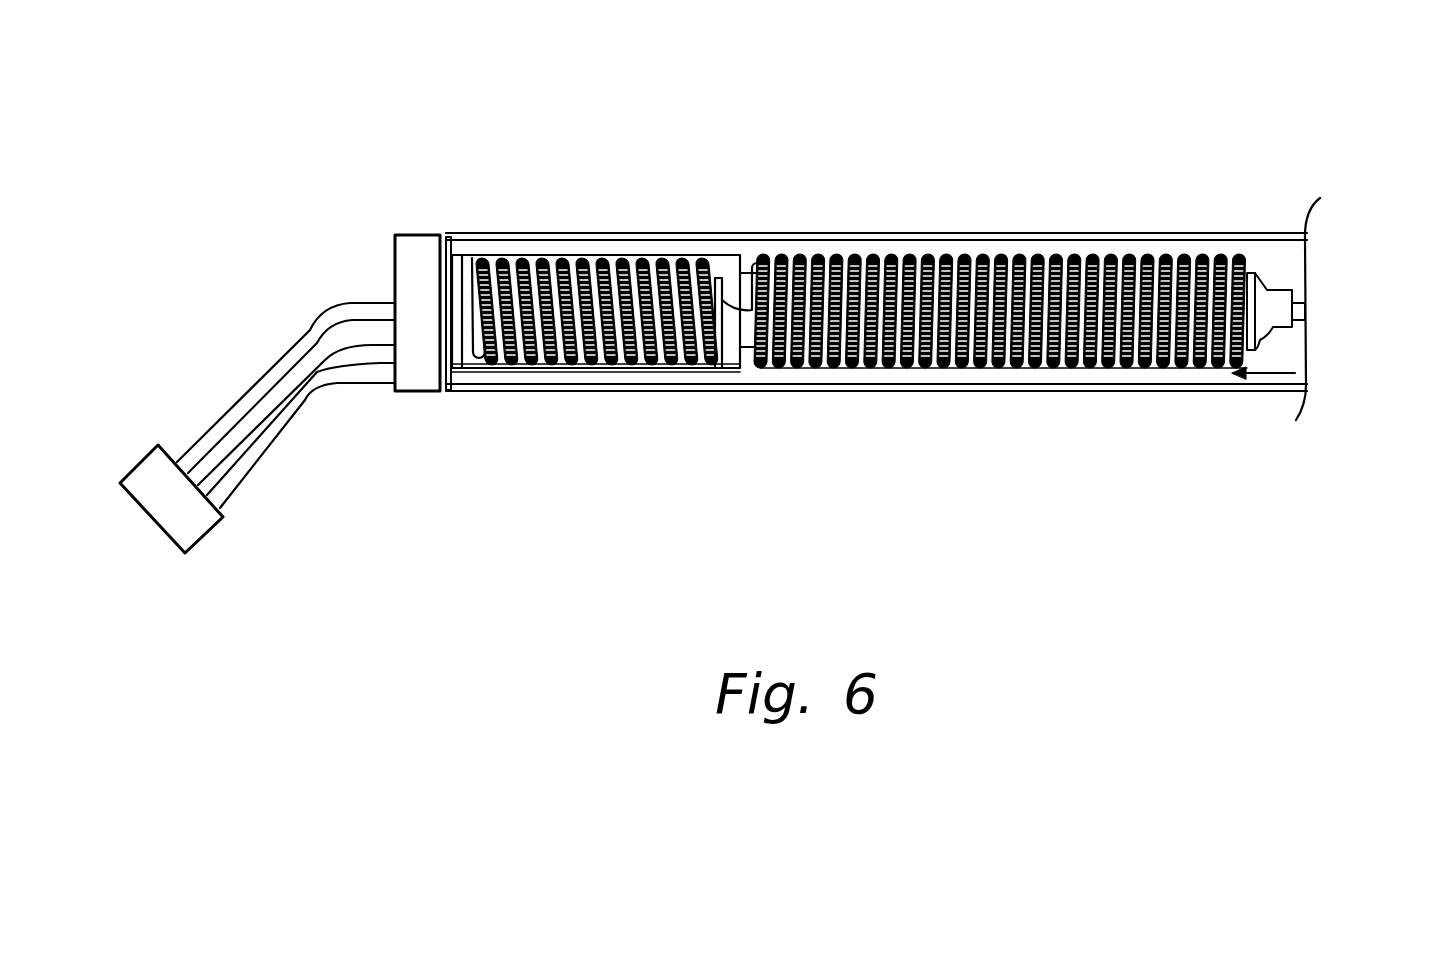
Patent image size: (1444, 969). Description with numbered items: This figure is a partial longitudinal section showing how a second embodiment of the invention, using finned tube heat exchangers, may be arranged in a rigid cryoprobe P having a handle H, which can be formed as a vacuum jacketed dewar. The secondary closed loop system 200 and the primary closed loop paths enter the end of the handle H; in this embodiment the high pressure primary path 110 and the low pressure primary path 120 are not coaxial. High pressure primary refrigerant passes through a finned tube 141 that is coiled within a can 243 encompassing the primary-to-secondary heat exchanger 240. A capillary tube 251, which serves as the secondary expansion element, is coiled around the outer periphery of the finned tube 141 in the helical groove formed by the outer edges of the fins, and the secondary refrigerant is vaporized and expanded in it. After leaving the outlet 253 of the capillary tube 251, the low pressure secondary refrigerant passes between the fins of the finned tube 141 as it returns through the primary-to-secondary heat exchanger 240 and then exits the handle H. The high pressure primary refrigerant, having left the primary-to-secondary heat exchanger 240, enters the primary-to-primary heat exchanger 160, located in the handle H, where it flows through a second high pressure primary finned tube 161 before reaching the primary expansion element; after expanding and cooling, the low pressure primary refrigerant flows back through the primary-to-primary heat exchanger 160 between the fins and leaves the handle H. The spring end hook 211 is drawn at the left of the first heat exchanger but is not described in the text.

The rigid cryoprobe P is at (872, 223).
The handle H is at (883, 277).
The high pressure primary path 110 is at (797, 361).
The secondary closed loop system 200 is at (257, 433).
The low pressure primary path 120 is at (819, 425).
The finned tube 141 is at (604, 334).
The primary-to-secondary heat exchanger 240 is at (621, 238).
The hook end of first spring 211 is at (527, 241).
The outlet 253 is at (682, 376).
The can 243 is at (763, 237).
The capillary tube 251 is at (596, 405).
The primary-to-primary heat exchanger 160 is at (1000, 247).
The second high pressure primary finned tube 161 is at (1003, 421).